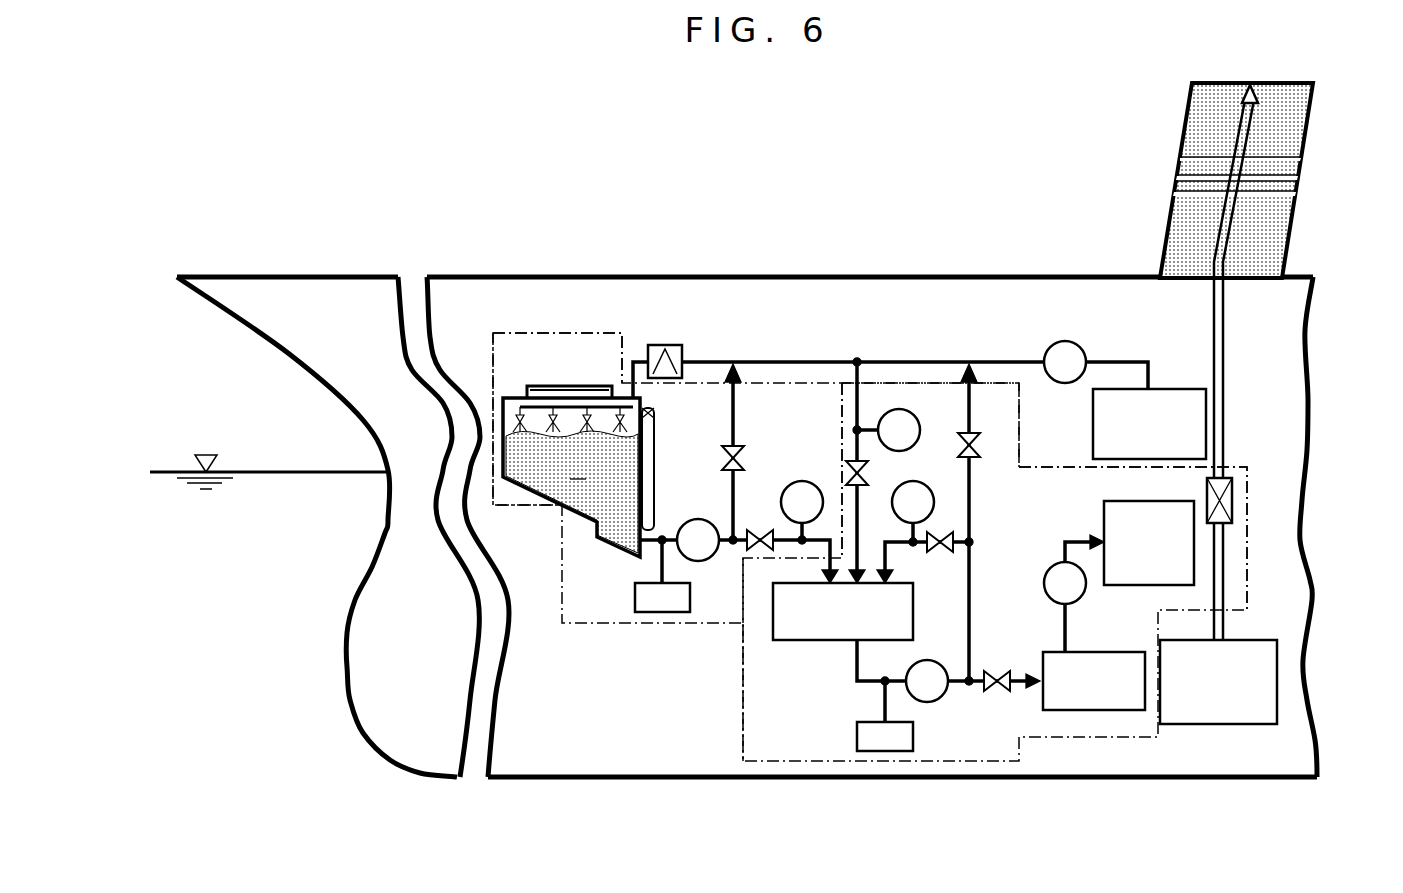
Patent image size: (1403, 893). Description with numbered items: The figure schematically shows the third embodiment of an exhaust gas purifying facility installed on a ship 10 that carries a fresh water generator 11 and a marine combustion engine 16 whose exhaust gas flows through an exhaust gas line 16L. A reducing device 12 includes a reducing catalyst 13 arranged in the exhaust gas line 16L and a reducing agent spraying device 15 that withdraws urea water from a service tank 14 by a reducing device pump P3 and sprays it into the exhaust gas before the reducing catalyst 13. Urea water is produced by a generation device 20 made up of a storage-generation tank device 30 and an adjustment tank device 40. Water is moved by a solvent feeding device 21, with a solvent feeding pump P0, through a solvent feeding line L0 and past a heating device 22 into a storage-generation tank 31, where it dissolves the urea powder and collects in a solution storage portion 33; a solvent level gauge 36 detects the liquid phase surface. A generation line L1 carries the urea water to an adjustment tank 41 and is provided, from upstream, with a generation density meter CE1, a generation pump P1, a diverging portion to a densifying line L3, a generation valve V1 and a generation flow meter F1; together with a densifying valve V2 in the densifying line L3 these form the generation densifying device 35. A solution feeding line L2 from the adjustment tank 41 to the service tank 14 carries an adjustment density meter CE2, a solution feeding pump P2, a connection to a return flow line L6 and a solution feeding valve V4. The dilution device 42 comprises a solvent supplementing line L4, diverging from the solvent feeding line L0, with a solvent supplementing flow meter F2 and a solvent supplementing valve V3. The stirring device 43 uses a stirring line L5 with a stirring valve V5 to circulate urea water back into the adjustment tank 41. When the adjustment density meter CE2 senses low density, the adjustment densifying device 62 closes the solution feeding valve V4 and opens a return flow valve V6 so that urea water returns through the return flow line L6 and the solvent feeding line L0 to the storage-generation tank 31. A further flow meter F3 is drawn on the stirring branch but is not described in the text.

The ship 10 is at (873, 273).
The fresh water generator 11 is at (1175, 387).
The reducing device 12 is at (1252, 554).
The reducing catalyst 13 is at (1228, 477).
The service tank 14 is at (1095, 650).
The reducing agent spraying device 15 is at (1108, 515).
The marine combustion engine 16 is at (1268, 667).
The exhaust gas line 16L is at (1223, 347).
The generation device 20 is at (848, 336).
The solvent feeding device 21 is at (1005, 336).
The heating device 22 is at (663, 345).
The storage-generation tank device 30 is at (586, 417).
The storage-generation tank 31 is at (515, 391).
The solution storage portion 33 is at (620, 540).
The generation densifying device 35 is at (767, 486).
The solvent level gauge 36 is at (659, 473).
The adjustment tank device 40 is at (843, 611).
The adjustment tank 41 is at (800, 642).
The dilution device 42 is at (898, 421).
The stirring device 43 is at (944, 519).
The adjustment densifying device 62 is at (985, 414).
The solvent feeding line L0 is at (943, 358).
The generation line L1 is at (790, 543).
The solution feeding line L2 is at (855, 665).
The densifying line L3 is at (736, 432).
The solvent supplementing line L4 is at (862, 413).
The stirring line L5 is at (897, 548).
The return flow line L6 is at (972, 520).
The generation valve V1 is at (760, 531).
The densifying valve V2 is at (750, 458).
The solvent supplementing valve V3 is at (874, 474).
The solution feeding valve V4 is at (994, 693).
The stirring valve V5 is at (940, 554).
The return flow valve V6 is at (982, 445).
The solvent feeding pump P0 is at (1065, 362).
The generation pump P1 is at (679, 540).
The solution feeding pump P2 is at (927, 681).
The reducing device pump P3 is at (1074, 593).
The generation flow meter F1 is at (802, 510).
The solvent supplementing flow meter F2 is at (935, 403).
The flow meter F3 is at (913, 511).
The generation density meter CE1 is at (662, 574).
The adjustment density meter CE2 is at (885, 716).